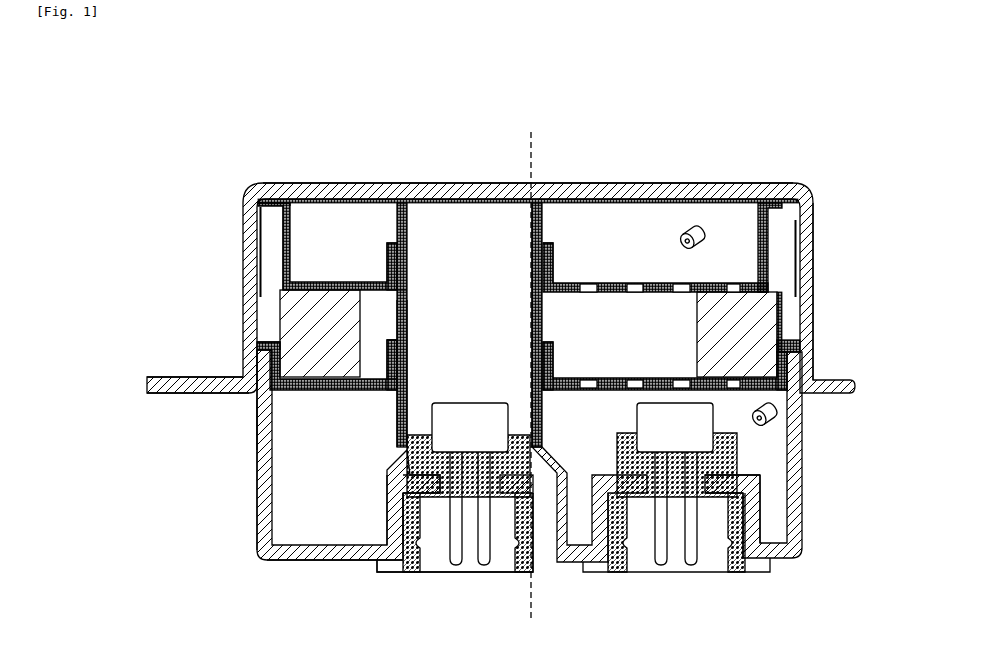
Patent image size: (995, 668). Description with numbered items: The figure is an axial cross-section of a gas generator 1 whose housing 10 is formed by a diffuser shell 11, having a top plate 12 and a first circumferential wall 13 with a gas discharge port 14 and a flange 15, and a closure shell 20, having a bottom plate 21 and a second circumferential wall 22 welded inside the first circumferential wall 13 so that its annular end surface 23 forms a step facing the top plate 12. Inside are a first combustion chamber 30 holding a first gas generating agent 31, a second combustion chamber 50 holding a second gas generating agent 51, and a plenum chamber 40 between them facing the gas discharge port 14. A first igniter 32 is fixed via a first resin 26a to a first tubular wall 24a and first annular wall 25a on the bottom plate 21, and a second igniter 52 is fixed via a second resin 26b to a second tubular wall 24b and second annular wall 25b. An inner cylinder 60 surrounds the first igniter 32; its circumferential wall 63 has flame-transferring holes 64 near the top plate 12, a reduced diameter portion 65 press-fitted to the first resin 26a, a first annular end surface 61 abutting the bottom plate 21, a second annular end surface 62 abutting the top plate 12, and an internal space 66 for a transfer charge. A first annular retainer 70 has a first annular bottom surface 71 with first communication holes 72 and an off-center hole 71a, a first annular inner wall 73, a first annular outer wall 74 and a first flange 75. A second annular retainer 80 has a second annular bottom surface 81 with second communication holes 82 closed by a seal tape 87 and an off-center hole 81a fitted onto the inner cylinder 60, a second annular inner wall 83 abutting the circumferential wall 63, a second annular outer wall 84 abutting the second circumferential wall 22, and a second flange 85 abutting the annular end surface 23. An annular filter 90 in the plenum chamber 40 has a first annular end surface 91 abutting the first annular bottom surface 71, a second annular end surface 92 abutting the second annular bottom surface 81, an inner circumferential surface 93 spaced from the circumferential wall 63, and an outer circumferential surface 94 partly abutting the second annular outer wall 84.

The gas generator 1 is at (660, 140).
The housing 10 is at (913, 342).
The diffuser shell 11 is at (808, 368).
The top plate 12 is at (376, 183).
The first circumferential wall 13 is at (808, 324).
The gas discharge port 14 is at (812, 222).
The flange 15 is at (178, 381).
The closure shell 20 is at (802, 411).
The bottom plate 21 is at (310, 562).
The second circumferential wall 22 is at (257, 491).
The annular end surface 23 is at (804, 346).
The first tubular wall 24a is at (388, 502).
The second tubular wall 24b is at (755, 523).
The first annular wall 25a is at (398, 466).
The second annular wall 25b is at (762, 482).
The first resin 26a is at (408, 443).
The second resin 26b is at (616, 441).
The first combustion chamber 30 is at (656, 224).
The first gas generating agent 31 is at (709, 230).
The first igniter 32 is at (485, 400).
The plenum chamber 40 is at (389, 334).
The second combustion chamber 50 is at (284, 535).
The second gas generating agent 51 is at (765, 430).
The second igniter 52 is at (635, 410).
The inner cylinder 60 is at (530, 302).
The first annular end surface 61 is at (378, 562).
The second annular end surface 62 is at (402, 199).
The circumferential wall 63 is at (397, 406).
The flame-transferring holes 64 is at (396, 218).
The reduced diameter portion 65 is at (546, 453).
The internal space 66 is at (478, 236).
The first annular retainer 70 is at (328, 279).
The first annular bottom surface 71 is at (607, 283).
The off-center hole 71a is at (410, 293).
The first communication holes 72 is at (637, 283).
The first annular inner wall 73 is at (551, 254).
The first annular outer wall 74 is at (288, 220).
The first flange 75 is at (284, 199).
The second annular retainer 80 is at (322, 394).
The second annular bottom surface 81 is at (608, 378).
The off-center hole 81a is at (399, 391).
The second communication holes 82 is at (637, 378).
The second annular inner wall 83 is at (399, 359).
The second annular outer wall 84 is at (258, 424).
The second flange 85 is at (262, 345).
The seal tape 87 is at (555, 362).
The annular filter 90 is at (695, 302).
The first annular end surface 91 is at (757, 283).
The second annular end surface 92 is at (719, 390).
The inner circumferential surface 93 is at (697, 353).
The outer circumferential surface 94 is at (785, 332).